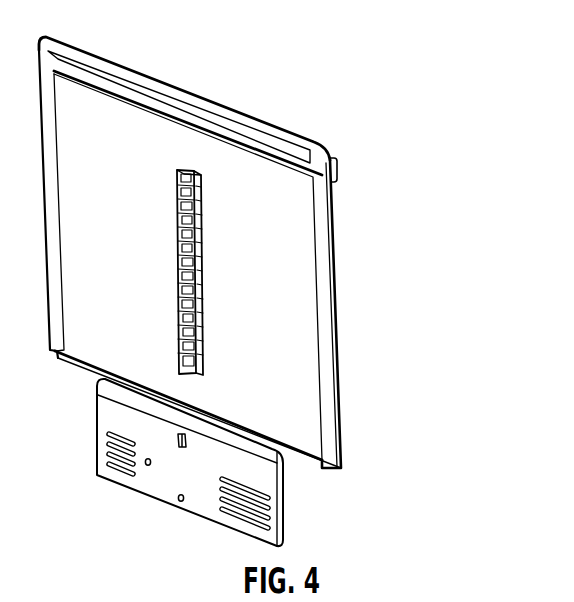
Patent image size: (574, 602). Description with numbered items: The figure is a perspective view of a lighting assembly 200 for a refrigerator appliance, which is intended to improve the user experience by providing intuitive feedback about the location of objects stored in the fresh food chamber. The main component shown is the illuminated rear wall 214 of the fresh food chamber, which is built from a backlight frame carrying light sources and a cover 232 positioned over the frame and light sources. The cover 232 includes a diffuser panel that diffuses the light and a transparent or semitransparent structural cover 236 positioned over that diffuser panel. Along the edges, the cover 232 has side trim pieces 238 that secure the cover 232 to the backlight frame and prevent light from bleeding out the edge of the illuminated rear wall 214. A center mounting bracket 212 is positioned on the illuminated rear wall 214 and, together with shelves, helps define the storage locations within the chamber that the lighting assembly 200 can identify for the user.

The lighting assembly 200 is at (457, 73).
The center mounting bracket 212 is at (200, 287).
The illuminated rear wall 214 is at (339, 422).
The cover 232 is at (273, 185).
The structural cover 236 is at (137, 135).
The side trim pieces 238 is at (336, 222).